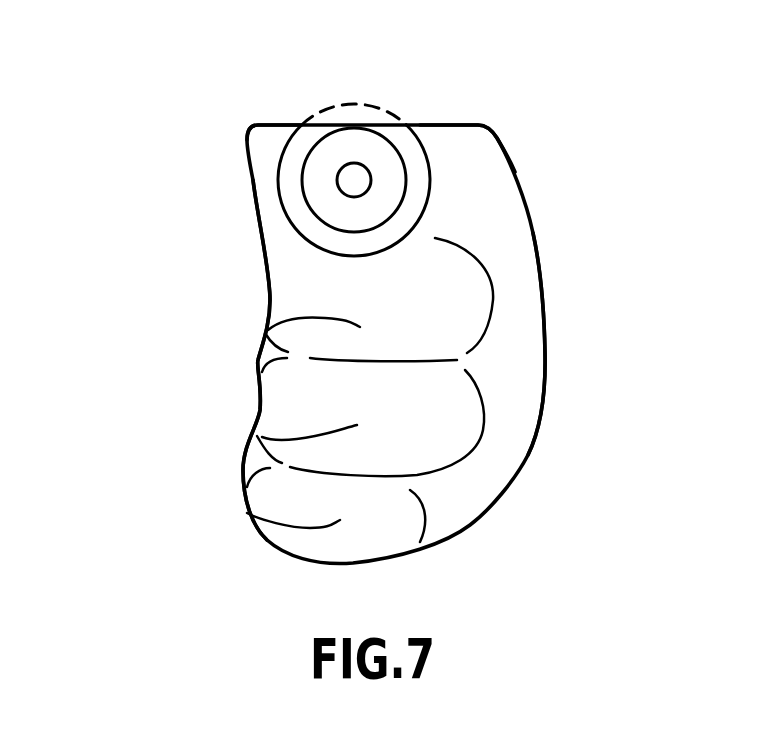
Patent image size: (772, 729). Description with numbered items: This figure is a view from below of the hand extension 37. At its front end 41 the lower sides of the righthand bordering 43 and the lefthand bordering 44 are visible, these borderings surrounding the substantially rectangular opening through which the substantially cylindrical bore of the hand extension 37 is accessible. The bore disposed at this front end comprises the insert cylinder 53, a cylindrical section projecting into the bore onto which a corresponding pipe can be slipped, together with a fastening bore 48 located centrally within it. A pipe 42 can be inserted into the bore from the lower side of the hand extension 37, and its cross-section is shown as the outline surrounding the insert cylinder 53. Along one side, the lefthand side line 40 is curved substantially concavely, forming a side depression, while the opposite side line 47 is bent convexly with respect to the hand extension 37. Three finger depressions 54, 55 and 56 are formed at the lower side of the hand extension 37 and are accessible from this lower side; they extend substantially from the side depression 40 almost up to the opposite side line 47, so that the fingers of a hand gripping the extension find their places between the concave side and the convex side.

The hand extension 37 is at (551, 165).
The lefthand side line 40 is at (268, 301).
The front side 41 is at (324, 93).
The pipe 42 is at (354, 103).
The righthand bordering 43 is at (441, 125).
The lefthand bordering 44 is at (278, 125).
The side line 47 is at (545, 328).
The fastening bore 48 is at (356, 178).
The insert cylinder 53 is at (385, 163).
The finger depression 54 is at (268, 328).
The finger depression 55 is at (262, 437).
The finger depression 56 is at (247, 513).